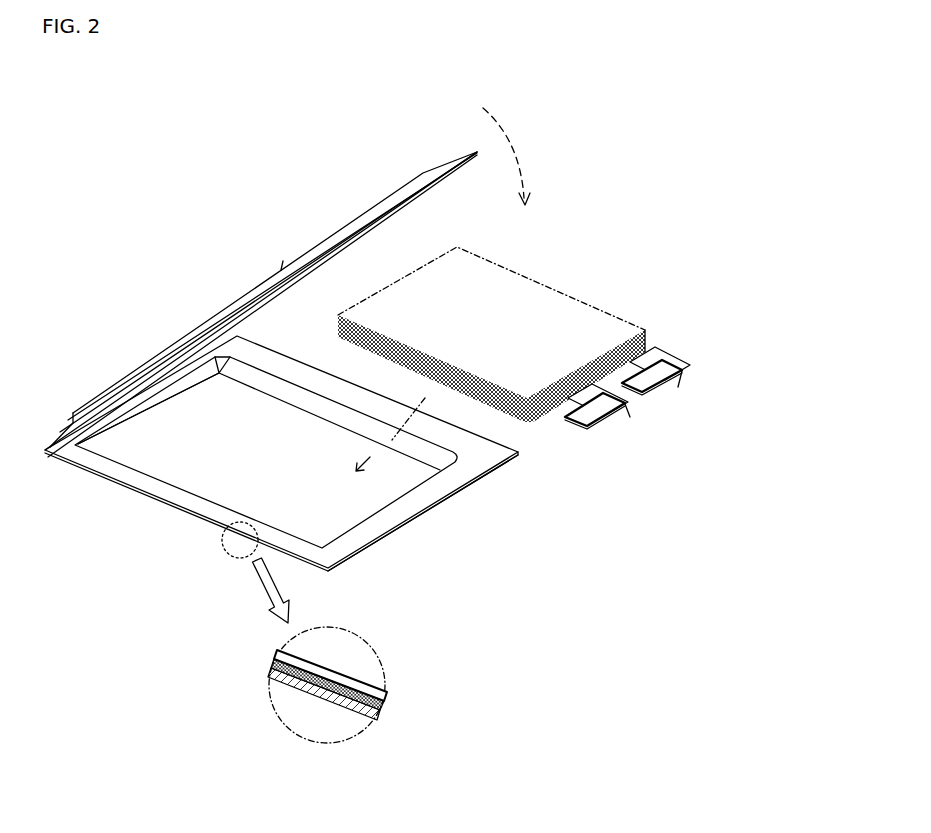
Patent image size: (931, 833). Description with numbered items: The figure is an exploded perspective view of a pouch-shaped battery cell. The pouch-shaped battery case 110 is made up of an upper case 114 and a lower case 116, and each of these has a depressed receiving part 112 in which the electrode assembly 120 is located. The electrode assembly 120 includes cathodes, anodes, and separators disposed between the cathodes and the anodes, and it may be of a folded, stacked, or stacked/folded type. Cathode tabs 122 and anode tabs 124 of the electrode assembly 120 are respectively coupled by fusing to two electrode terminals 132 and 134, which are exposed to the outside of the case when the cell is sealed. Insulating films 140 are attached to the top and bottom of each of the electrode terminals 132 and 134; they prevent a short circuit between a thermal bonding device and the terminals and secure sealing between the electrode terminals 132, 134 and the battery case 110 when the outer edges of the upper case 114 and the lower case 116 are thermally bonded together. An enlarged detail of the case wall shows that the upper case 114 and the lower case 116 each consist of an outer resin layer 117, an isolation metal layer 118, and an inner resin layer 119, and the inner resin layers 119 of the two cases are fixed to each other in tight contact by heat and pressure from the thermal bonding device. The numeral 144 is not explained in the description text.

The battery case 110 is at (120, 328).
The depressed receiving part 112 is at (323, 261).
The upper case 114 is at (307, 250).
The lower case 116 is at (180, 508).
The outer resin layer 117 is at (388, 692).
The isolation metal layer 118 is at (387, 705).
The inner resin layer 119 is at (378, 713).
The electrode assembly 120 is at (558, 307).
The cathode tabs 122 is at (565, 418).
The anode tabs 124 is at (645, 340).
The electrode terminal 132 is at (620, 430).
The electrode terminal 134 is at (682, 378).
The insulating films 140 is at (630, 417).
The flange 144 is at (405, 512).